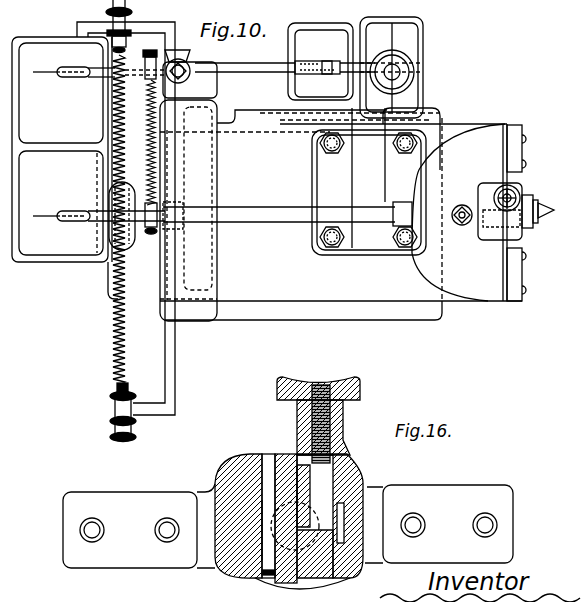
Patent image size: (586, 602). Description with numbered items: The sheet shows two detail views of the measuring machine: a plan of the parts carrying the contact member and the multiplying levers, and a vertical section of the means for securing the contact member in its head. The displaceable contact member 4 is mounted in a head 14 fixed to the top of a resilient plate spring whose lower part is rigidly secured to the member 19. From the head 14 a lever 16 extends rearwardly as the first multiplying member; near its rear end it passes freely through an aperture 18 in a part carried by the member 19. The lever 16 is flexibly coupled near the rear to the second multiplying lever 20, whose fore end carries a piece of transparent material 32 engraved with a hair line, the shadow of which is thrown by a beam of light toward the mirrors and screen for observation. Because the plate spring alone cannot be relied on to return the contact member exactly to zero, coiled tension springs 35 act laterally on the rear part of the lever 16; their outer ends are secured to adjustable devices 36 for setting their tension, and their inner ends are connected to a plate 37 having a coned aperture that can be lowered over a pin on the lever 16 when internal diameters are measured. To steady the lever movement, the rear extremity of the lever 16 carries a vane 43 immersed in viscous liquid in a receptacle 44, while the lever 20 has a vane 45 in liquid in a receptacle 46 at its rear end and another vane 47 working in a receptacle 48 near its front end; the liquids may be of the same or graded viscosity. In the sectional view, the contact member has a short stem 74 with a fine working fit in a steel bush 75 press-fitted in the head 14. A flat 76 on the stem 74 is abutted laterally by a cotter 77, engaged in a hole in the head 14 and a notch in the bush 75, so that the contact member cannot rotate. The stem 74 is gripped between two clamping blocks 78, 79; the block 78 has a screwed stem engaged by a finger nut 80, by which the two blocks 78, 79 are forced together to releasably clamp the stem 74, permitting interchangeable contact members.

In FIG. 10, the contact member 4 is at (541, 213).
In FIG. 10, the head 14 is at (513, 268).
In FIG. 16, the head 14 is at (226, 483).
In FIG. 10, the lever 16 is at (247, 216).
In FIG. 10, the aperture 18 is at (192, 200).
In FIG. 10, the member 19 is at (297, 312).
In FIG. 10, the second multiplying lever 20 is at (247, 71).
In FIG. 10, the piece of transparent material 32 is at (414, 58).
In FIG. 10, the coiled tension springs 35 is at (122, 58).
In FIG. 10, the adjustable devices 36 is at (132, 13).
In FIG. 10, the plate 37 is at (108, 238).
In FIG. 10, the vane 43 is at (50, 212).
In FIG. 10, the receptacle 44 is at (61, 203).
In FIG. 10, the vane 45 is at (50, 78).
In FIG. 10, the receptacle 46 is at (60, 149).
In FIG. 10, the vane 47 is at (326, 66).
In FIG. 10, the receptacle 48 is at (306, 26).
In FIG. 16, the stem 74 is at (272, 535).
In FIG. 16, the steel bush 75 is at (290, 503).
In FIG. 16, the flat 76 is at (282, 528).
In FIG. 16, the cotter 77 is at (269, 467).
In FIG. 16, the clamping block 78 is at (330, 555).
In FIG. 16, the clamping block 79 is at (292, 494).
In FIG. 16, the finger nut 80 is at (360, 393).